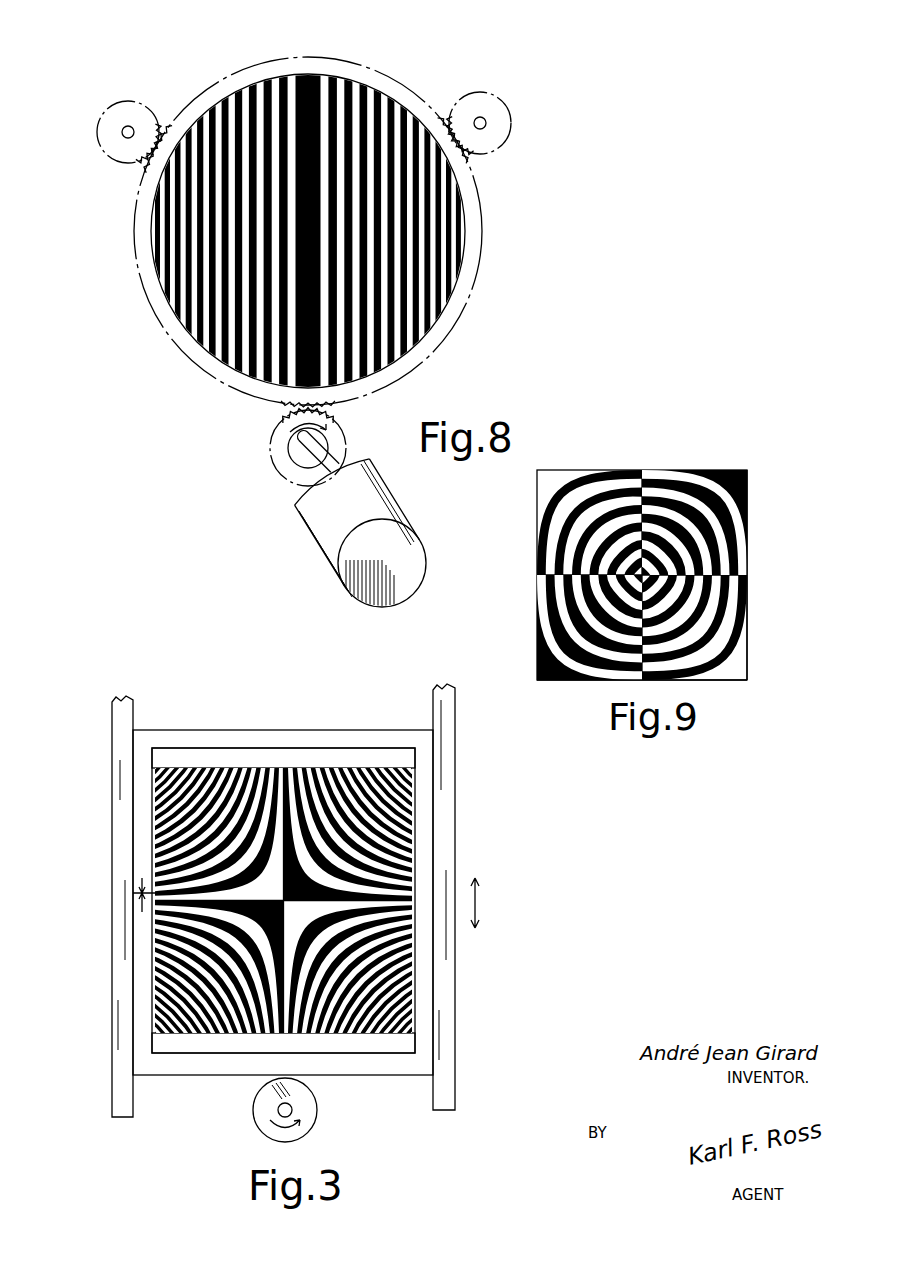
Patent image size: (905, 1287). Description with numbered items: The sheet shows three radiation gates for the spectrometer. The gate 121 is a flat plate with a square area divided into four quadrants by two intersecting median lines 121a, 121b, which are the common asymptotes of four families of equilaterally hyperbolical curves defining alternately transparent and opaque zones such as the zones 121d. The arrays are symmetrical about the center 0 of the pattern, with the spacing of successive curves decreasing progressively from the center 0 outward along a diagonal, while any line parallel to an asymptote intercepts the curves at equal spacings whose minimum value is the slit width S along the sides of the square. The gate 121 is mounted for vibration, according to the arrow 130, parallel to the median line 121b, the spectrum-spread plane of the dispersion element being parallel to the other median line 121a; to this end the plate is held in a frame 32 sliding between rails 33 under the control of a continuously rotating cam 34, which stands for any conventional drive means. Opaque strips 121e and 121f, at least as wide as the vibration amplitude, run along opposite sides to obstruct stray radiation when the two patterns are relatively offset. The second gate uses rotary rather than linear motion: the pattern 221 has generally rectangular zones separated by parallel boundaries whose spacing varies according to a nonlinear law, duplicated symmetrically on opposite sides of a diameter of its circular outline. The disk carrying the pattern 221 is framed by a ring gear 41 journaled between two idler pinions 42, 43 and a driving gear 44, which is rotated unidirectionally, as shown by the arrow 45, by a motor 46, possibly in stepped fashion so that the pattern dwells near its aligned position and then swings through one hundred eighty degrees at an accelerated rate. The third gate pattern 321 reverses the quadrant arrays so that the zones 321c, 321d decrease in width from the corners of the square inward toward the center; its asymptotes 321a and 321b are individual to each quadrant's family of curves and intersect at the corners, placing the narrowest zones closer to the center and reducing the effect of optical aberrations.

In FIG. 8, the ring gear 41 is at (305, 70).
In FIG. 8, the pattern 221 is at (420, 232).
In FIG. 8, the idler pinion 42 is at (116, 120).
In FIG. 8, the idler pinion 43 is at (492, 120).
In FIG. 8, the driving gear 44 is at (270, 446).
In FIG. 8, the arrow 45 is at (296, 470).
In FIG. 8, the motor 46 is at (402, 512).
In FIG. 9, the pattern 321 is at (704, 463).
In FIG. 9, the asymptote 321a is at (748, 646).
In FIG. 9, the asymptote 321b is at (732, 680).
In FIG. 9, the zone 321c is at (707, 538).
In FIG. 9, the zone 321d is at (713, 506).
In FIG. 3, the gate 121 is at (152, 985).
In FIG. 3, the median line 121a is at (283, 903).
In FIG. 3, the median line 121b is at (283, 770).
In FIG. 3, the zone 121d is at (320, 864).
In FIG. 3, the opaque strip 121e is at (210, 758).
In FIG. 3, the opaque strip 121f is at (172, 1052).
In FIG. 3, the center 0 is at (325, 903).
In FIG. 3, the slit width S is at (144, 882).
In FIG. 3, the arrow 130 is at (479, 900).
In FIG. 3, the frame 32 is at (238, 1074).
In FIG. 3, the rails 33 is at (112, 1108).
In FIG. 3, the cam 34 is at (318, 1107).